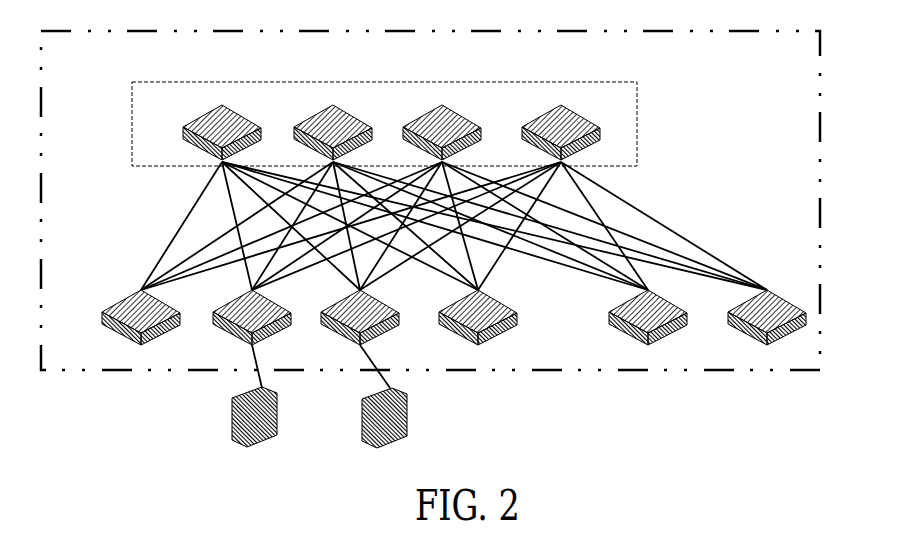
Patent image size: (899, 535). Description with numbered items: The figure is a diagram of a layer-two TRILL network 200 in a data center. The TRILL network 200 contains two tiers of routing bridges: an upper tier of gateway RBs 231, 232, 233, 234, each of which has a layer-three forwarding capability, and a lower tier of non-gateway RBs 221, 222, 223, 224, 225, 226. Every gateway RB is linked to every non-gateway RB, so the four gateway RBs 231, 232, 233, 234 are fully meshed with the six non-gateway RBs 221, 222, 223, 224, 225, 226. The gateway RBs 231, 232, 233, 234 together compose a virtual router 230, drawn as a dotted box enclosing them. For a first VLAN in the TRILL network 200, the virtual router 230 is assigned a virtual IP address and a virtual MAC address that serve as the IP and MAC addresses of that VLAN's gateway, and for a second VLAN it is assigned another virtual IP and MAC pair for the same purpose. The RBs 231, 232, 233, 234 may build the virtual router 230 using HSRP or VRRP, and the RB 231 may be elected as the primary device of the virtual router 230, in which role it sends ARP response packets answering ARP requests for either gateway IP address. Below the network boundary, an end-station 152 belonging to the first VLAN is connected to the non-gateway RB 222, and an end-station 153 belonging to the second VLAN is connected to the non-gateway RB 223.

The TRILL network 200 is at (820, 88).
The virtual router 230 is at (637, 115).
The gateway RB 231 is at (182, 127).
The gateway RB 232 is at (293, 127).
The gateway RB 233 is at (402, 127).
The gateway RB 234 is at (521, 127).
The non-gateway RB 221 is at (101, 312).
The non-gateway RB 222 is at (212, 312).
The non-gateway RB 223 is at (320, 312).
The non-gateway RB 224 is at (438, 312).
The non-gateway RB 225 is at (608, 312).
The non-gateway RB 226 is at (727, 312).
The end-station 152 is at (252, 408).
The end-station 153 is at (383, 407).